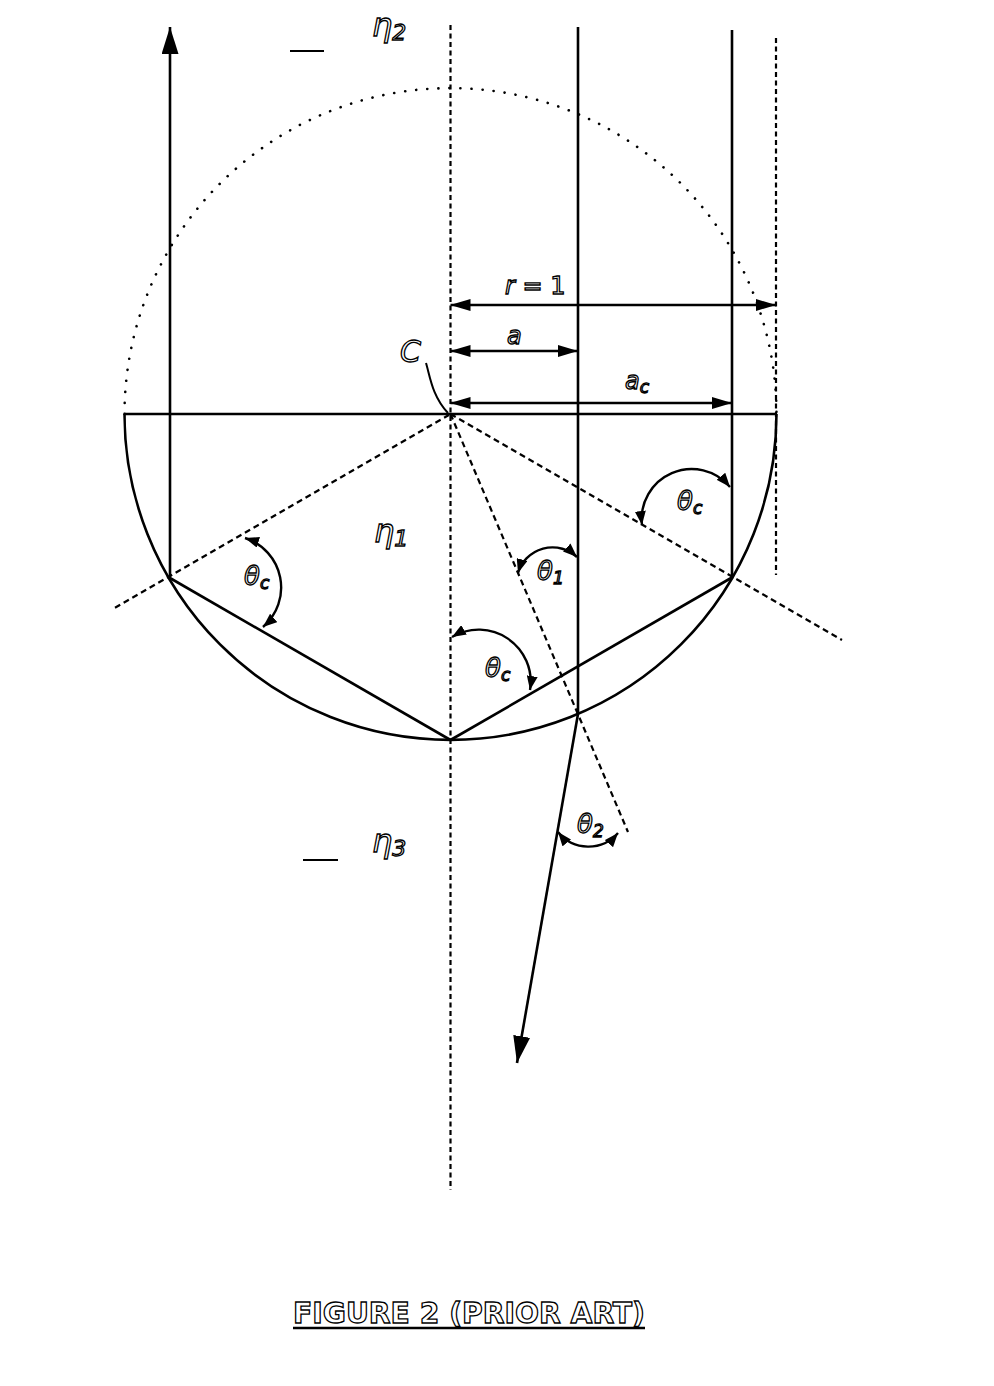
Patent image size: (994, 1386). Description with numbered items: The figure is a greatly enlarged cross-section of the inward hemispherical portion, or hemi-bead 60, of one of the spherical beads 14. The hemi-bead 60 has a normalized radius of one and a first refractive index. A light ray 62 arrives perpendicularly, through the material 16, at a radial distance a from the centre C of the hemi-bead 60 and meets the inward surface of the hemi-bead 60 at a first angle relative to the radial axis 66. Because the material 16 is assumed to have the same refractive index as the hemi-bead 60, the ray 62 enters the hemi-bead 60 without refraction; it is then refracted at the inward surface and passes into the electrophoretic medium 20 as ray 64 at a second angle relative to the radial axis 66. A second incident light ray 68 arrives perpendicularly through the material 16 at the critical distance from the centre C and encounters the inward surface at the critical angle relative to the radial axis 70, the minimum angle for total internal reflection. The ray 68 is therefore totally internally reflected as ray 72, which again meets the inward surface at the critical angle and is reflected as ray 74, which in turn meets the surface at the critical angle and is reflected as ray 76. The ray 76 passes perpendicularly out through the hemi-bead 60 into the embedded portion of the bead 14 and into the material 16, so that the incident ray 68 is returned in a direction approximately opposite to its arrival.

The spherical bead 14 is at (133, 348).
The material 16 is at (308, 37).
The electrophoretic medium 20 is at (321, 846).
The hemi-bead 60 is at (292, 705).
The light ray 62 is at (578, 194).
The ray 64 is at (545, 915).
The radial axis 66 is at (599, 758).
The incident light ray 68 is at (732, 97).
The radial axis 70 is at (823, 628).
The ray 72 is at (636, 633).
The ray 74 is at (340, 675).
The ray 76 is at (170, 312).